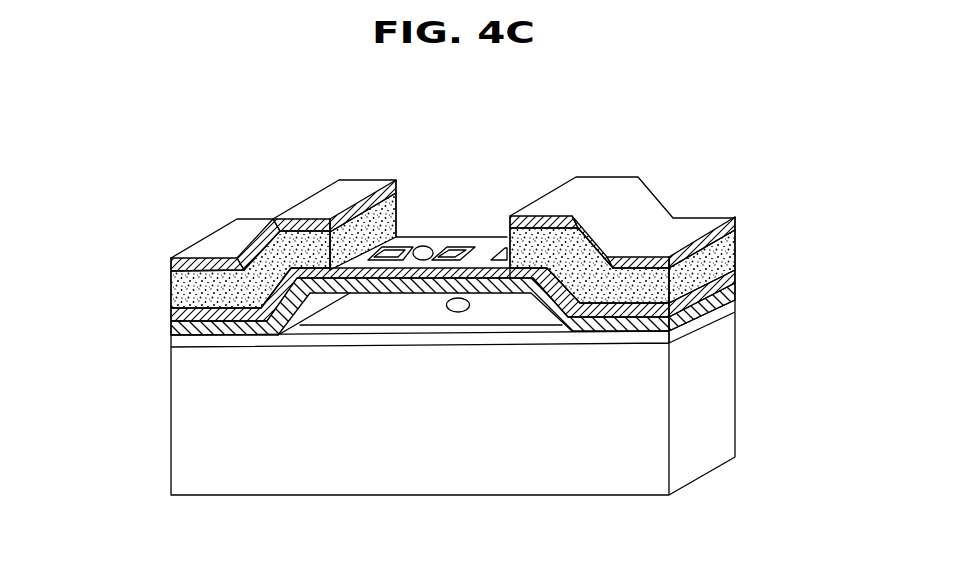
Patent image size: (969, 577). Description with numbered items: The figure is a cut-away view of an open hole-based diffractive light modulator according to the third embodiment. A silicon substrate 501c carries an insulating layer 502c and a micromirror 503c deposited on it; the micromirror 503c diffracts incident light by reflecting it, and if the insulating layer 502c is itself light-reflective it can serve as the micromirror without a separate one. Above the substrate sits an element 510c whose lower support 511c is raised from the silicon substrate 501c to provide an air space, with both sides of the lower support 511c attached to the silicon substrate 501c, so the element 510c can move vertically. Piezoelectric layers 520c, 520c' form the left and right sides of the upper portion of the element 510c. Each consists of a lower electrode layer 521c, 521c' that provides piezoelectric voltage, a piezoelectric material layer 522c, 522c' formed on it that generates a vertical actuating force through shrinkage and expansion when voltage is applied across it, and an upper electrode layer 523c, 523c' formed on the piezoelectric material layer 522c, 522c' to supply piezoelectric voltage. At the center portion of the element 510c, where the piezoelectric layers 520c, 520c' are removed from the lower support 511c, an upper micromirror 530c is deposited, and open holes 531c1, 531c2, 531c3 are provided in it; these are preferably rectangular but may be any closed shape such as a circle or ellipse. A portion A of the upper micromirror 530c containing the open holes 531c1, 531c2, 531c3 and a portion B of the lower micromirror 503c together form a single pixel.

The silicon substrate 501c is at (545, 488).
The insulating layer 502c is at (718, 311).
The micromirror 503c is at (545, 330).
The element 510c is at (458, 211).
The lower support 511c is at (173, 329).
The piezoelectric layer 520c is at (420, 196).
The lower electrode layer 521c is at (420, 224).
The piezoelectric material layer 522c is at (311, 206).
The upper electrode layer 523c is at (298, 177).
The piezoelectric layer 520c' is at (695, 247).
The lower electrode layer 521c' is at (739, 293).
The piezoelectric material layer 522c' is at (660, 265).
The upper electrode layer 523c' is at (660, 227).
The upper micromirror 530c is at (467, 203).
The open hole 531c1 is at (402, 249).
The open hole 531c2 is at (462, 247).
The open hole 531c3 is at (497, 250).
The portion of the upper micromirror A is at (432, 249).
The portion of the lower micromirror B is at (458, 312).